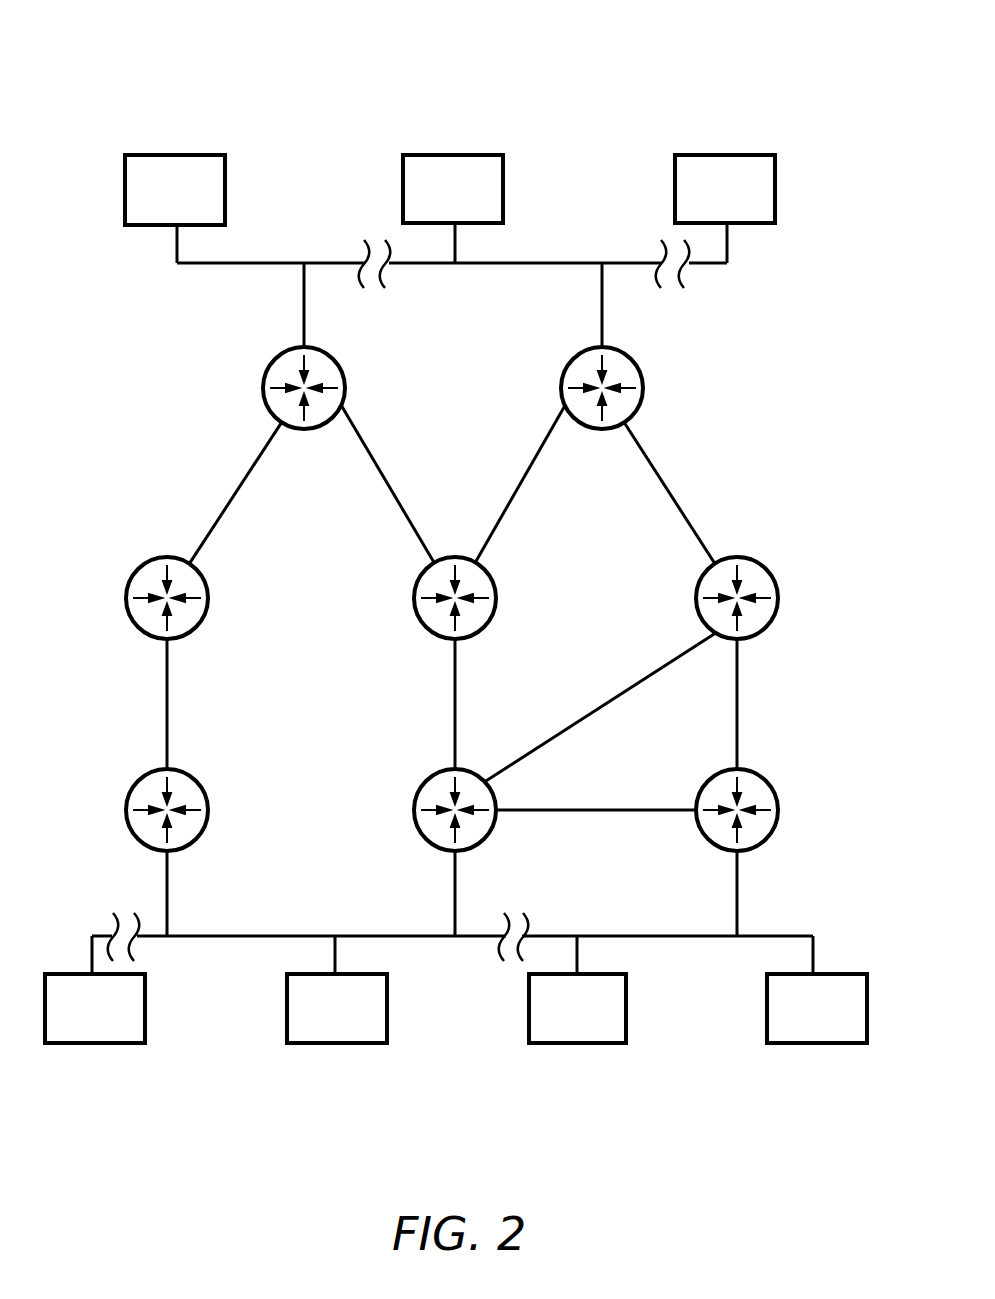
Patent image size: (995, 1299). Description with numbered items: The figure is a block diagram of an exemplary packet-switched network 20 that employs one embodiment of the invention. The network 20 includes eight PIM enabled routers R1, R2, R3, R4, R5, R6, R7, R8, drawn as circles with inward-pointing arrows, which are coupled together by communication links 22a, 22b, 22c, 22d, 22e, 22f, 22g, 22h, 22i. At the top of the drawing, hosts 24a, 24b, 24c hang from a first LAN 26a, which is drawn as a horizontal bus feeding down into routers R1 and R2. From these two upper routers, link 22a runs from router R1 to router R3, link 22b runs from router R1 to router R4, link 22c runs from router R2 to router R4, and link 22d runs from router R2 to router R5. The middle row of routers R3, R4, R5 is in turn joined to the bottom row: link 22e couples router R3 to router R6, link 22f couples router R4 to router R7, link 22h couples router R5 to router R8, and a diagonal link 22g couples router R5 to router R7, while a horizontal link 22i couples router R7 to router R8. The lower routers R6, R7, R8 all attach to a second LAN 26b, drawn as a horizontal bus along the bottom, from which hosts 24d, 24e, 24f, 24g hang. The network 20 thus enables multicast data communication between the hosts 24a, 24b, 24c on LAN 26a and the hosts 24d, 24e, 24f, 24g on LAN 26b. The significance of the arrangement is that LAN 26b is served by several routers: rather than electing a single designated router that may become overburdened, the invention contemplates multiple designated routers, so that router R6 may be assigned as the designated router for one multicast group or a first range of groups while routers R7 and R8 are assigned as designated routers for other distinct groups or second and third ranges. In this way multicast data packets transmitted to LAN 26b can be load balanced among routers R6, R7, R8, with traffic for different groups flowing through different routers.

The network 20 is at (92, 50).
The host 24a is at (177, 155).
The host 24b is at (455, 155).
The host 24c is at (709, 155).
The host 24d is at (102, 1043).
The host 24e is at (342, 1043).
The host 24f is at (585, 1043).
The host 24g is at (827, 1043).
The LAN 26a is at (522, 266).
The LAN 26b is at (784, 933).
The PIM enabled router R1 is at (346, 386).
The PIM enabled router R2 is at (644, 386).
The PIM enabled router R3 is at (208, 587).
The PIM enabled router R4 is at (497, 586).
The PIM enabled router R5 is at (778, 586).
The PIM enabled router R6 is at (127, 811).
The PIM enabled router R7 is at (480, 845).
The PIM enabled router R8 is at (779, 810).
The communication link 22a is at (232, 487).
The communication link 22b is at (383, 477).
The communication link 22c is at (538, 457).
The communication link 22d is at (667, 472).
The communication link 22e is at (165, 682).
The communication link 22f is at (453, 706).
The communication link 22g is at (601, 706).
The communication link 22h is at (740, 684).
The communication link 22i is at (607, 812).